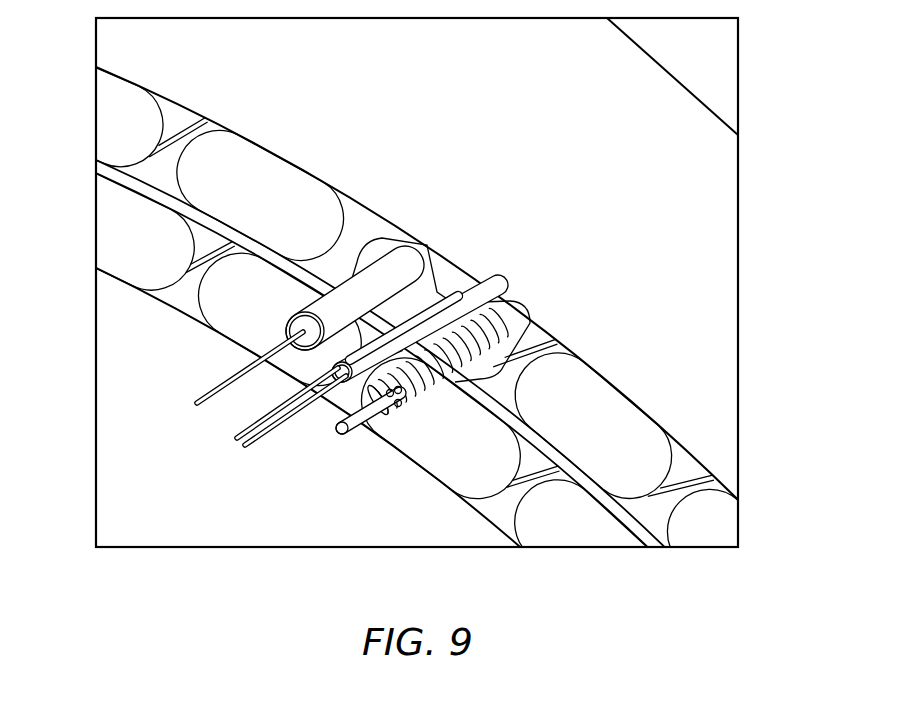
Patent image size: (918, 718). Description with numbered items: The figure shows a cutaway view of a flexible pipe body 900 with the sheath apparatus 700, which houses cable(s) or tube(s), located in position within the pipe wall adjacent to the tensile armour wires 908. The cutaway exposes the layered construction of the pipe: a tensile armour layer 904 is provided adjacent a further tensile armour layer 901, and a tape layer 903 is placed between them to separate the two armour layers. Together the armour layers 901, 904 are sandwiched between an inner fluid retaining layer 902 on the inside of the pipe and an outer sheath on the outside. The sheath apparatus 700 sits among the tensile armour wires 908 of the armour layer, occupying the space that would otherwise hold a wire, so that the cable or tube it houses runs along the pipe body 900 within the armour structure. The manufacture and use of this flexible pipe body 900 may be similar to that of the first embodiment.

The flexible pipe body 900 is at (744, 91).
The further tensile armour layer 901 is at (583, 553).
The inner fluid retaining layer 902 is at (307, 553).
The tape layer 903 is at (93, 161).
The tensile armour layer 904 is at (745, 530).
The tensile armour wires 908 is at (287, 204).
The sheath apparatus 700 is at (540, 335).